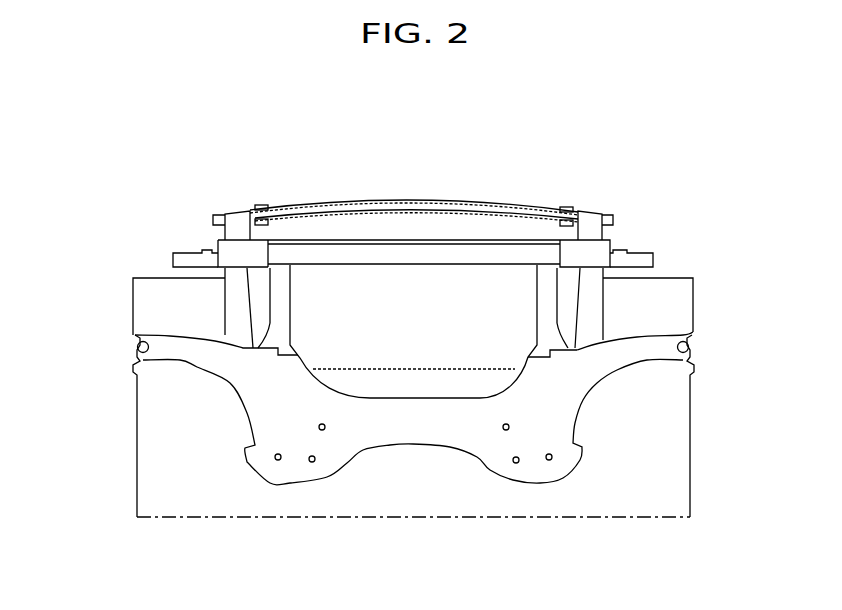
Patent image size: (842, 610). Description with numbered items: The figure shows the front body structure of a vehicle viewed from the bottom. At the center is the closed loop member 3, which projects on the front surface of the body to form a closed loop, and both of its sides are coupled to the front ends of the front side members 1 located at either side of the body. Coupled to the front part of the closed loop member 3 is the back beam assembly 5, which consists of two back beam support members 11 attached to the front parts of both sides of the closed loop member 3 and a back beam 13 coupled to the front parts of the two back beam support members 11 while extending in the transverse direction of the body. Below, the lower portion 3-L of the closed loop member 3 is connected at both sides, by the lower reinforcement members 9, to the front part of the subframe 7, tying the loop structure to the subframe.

The front side member 1 is at (237, 292).
The closed loop member 3 is at (602, 247).
The lower portion of the closed loop member 3-L is at (378, 250).
The back beam assembly 5 is at (423, 164).
The subframe 7 is at (422, 423).
The lower reinforcement member 9 is at (279, 316).
The back beam support member 11 is at (590, 222).
The back beam 13 is at (414, 176).